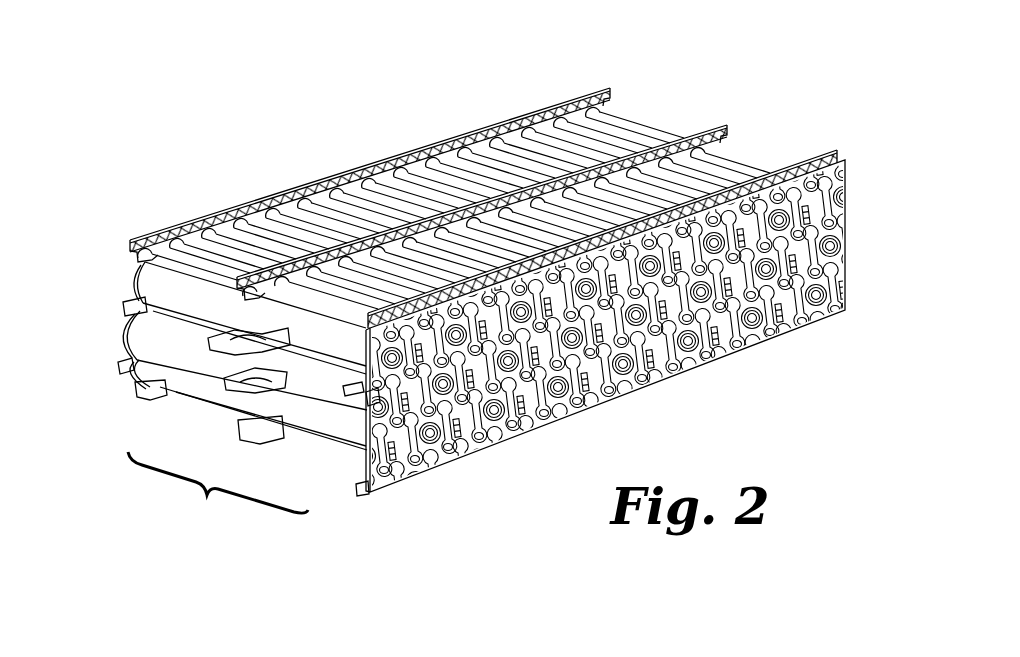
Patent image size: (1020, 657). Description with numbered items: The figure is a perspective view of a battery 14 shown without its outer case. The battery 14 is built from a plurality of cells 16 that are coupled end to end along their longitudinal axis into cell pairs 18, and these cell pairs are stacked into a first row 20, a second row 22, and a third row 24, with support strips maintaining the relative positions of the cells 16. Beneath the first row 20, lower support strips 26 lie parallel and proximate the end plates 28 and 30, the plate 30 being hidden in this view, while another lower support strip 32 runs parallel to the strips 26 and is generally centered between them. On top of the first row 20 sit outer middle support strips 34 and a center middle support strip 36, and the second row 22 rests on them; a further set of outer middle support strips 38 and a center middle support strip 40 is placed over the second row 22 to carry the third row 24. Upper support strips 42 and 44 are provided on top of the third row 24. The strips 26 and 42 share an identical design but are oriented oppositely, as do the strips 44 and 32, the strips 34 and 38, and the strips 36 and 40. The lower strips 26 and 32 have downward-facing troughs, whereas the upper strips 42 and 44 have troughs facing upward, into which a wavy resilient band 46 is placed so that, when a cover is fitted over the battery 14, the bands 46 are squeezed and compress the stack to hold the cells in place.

The battery 14 is at (670, 62).
The cells 16 is at (185, 394).
The cell pairs 18 is at (218, 487).
The first row of cell pairs 20 is at (113, 352).
The second row of cell pairs 22 is at (101, 325).
The third row of cell pairs 24 is at (121, 262).
The lower support strips 26 is at (138, 398).
The plate 28 is at (624, 394).
The plate 30 is at (384, 144).
The lower support strip 32 is at (300, 397).
The outer middle support strips 34 is at (123, 364).
The center middle support strip 36 is at (233, 343).
The outer middle support strips 38 is at (125, 298).
The center middle support strip 40 is at (238, 312).
The upper support strips 42 is at (136, 238).
The upper support strip 44 is at (724, 127).
The resilient band 46 is at (528, 98).